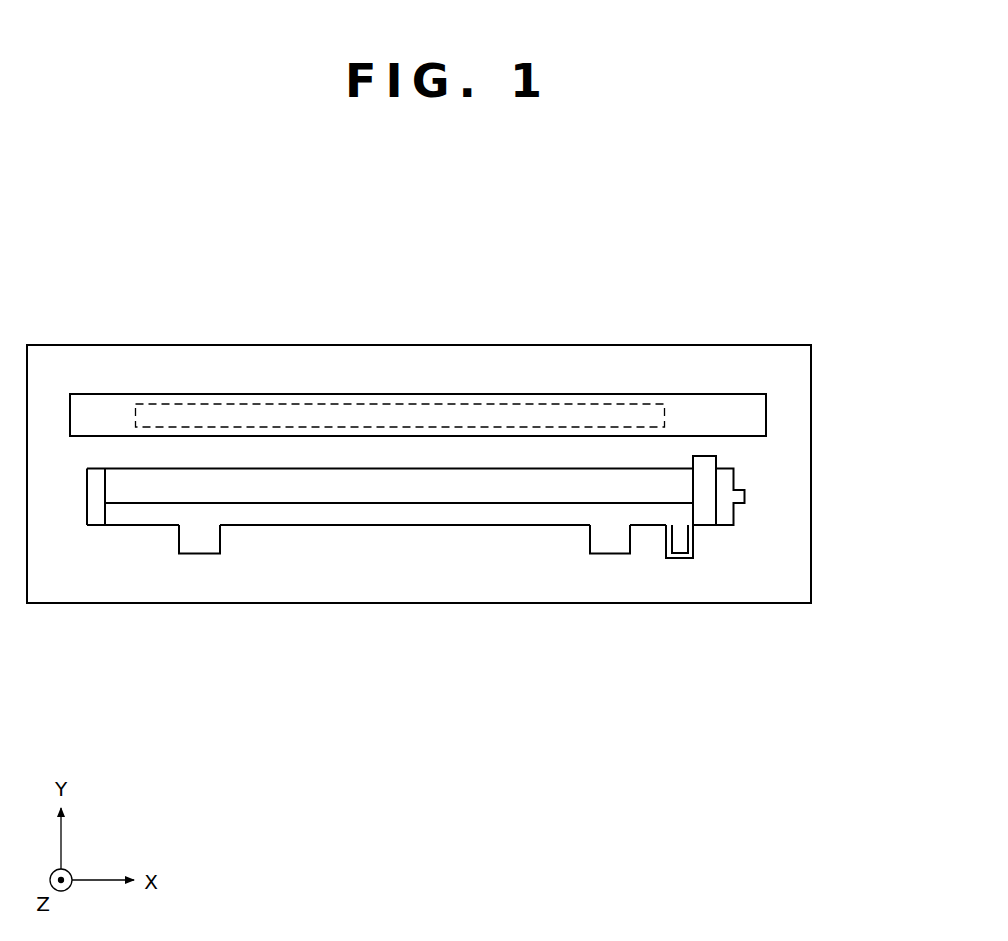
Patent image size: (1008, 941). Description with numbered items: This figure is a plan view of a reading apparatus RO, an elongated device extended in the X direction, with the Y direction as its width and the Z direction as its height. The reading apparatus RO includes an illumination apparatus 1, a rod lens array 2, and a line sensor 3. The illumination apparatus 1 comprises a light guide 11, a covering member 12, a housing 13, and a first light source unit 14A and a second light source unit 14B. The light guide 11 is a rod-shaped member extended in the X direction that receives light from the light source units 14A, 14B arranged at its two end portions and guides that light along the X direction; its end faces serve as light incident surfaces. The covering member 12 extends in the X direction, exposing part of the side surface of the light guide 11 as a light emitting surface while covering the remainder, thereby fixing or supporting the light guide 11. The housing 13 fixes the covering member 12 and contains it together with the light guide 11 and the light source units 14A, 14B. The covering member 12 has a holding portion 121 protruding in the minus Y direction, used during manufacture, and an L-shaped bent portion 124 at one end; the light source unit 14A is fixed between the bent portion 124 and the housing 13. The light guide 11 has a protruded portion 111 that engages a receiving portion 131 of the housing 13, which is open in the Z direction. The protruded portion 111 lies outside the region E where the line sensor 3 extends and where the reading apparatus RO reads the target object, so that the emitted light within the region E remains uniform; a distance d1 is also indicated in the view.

The illumination apparatus 1 is at (146, 650).
The rod lens array 2 is at (731, 410).
The line sensor 3 is at (606, 403).
The light guide 11 is at (385, 487).
The covering member 12 is at (485, 512).
The housing 13 is at (793, 588).
The first light source unit 14A is at (726, 515).
The second light source unit 14B is at (97, 515).
The protruded portion 111 is at (677, 562).
The holding portion 121 is at (198, 538).
The bent portion 124 is at (709, 465).
The receiving portion 131 is at (695, 540).
The region E is at (136, 427).
The distance d1 is at (685, 267).
The reading apparatus RO is at (102, 168).